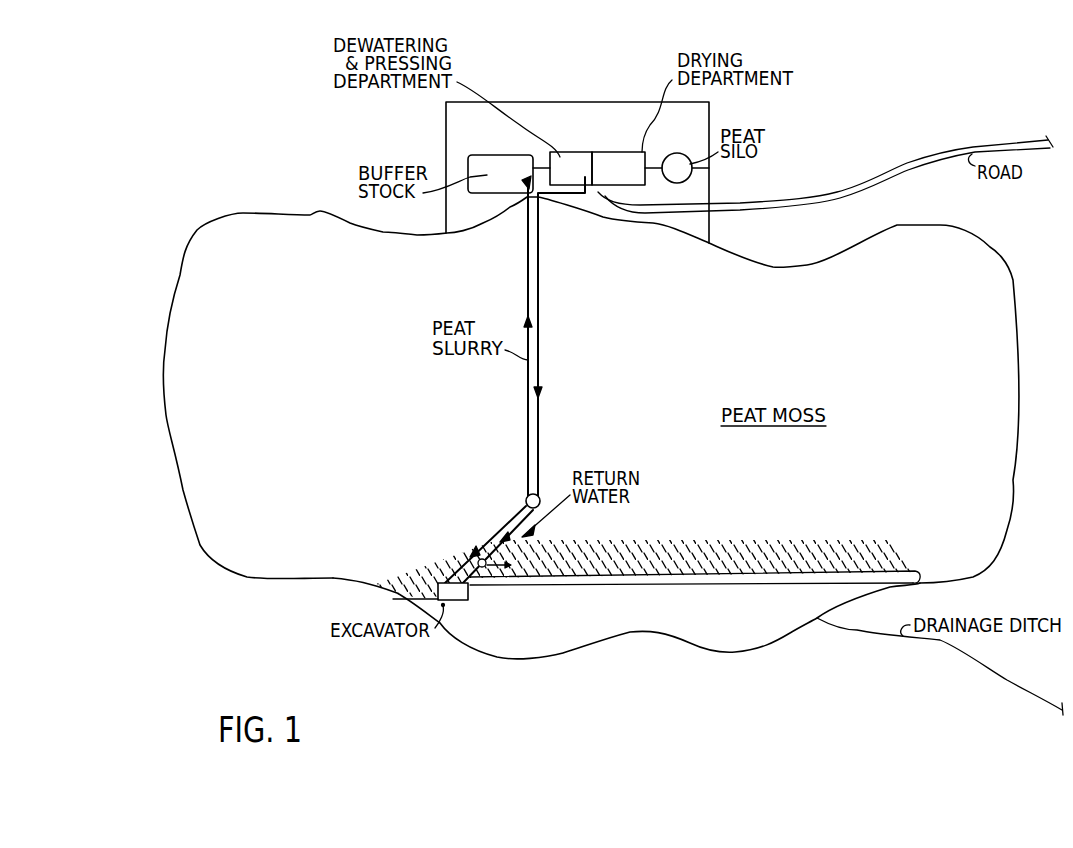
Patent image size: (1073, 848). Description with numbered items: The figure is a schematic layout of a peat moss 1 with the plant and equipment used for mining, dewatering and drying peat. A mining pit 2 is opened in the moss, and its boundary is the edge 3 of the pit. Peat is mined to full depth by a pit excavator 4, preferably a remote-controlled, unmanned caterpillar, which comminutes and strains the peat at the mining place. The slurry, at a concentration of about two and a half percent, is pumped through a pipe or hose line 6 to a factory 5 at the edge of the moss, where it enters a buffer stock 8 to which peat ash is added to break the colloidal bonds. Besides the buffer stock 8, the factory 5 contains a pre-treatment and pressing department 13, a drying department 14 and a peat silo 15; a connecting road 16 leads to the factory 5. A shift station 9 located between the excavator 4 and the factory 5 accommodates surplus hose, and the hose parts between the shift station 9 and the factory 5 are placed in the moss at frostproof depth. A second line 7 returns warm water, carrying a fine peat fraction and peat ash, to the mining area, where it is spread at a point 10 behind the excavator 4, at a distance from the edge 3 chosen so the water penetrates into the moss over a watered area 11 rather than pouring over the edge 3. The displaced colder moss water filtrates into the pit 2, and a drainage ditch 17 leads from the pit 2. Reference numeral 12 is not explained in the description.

The peat moss 1 is at (205, 523).
The mining pit 2 is at (575, 642).
The edge of the mining pit 3 is at (675, 585).
The pit excavator 4 is at (465, 600).
The factory 5 is at (526, 102).
The pipe or hose line 6 is at (528, 443).
The pipe or hose line 7 is at (540, 410).
The buffer stock 8 is at (470, 158).
The shift station 9 is at (527, 497).
The point for spreading return water 10 is at (497, 543).
The watered area 11 is at (658, 555).
The strip lower edge 12 is at (560, 580).
The pre-treatment and pressing department 13 is at (560, 157).
The drying department 14 is at (637, 156).
The peat silo 15 is at (688, 177).
The connecting road 16 is at (829, 188).
The drainage ditch 17 is at (953, 650).